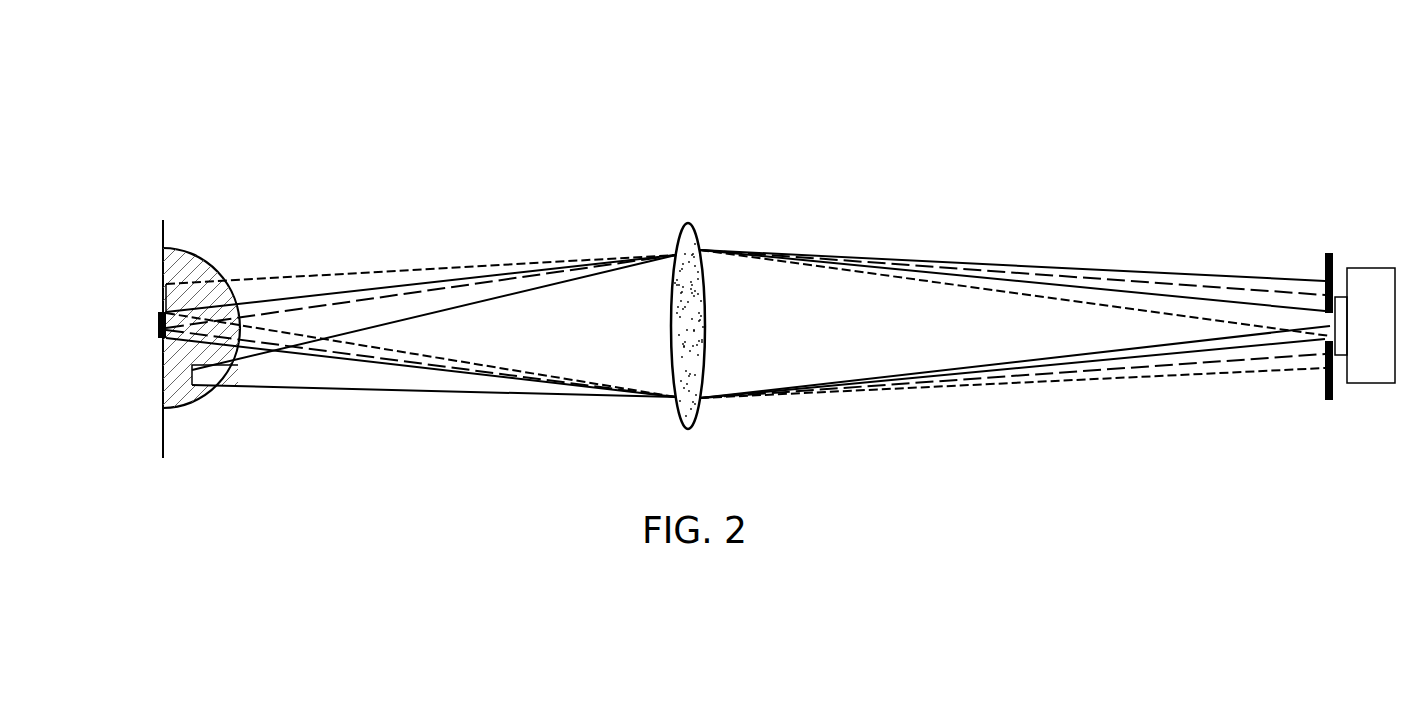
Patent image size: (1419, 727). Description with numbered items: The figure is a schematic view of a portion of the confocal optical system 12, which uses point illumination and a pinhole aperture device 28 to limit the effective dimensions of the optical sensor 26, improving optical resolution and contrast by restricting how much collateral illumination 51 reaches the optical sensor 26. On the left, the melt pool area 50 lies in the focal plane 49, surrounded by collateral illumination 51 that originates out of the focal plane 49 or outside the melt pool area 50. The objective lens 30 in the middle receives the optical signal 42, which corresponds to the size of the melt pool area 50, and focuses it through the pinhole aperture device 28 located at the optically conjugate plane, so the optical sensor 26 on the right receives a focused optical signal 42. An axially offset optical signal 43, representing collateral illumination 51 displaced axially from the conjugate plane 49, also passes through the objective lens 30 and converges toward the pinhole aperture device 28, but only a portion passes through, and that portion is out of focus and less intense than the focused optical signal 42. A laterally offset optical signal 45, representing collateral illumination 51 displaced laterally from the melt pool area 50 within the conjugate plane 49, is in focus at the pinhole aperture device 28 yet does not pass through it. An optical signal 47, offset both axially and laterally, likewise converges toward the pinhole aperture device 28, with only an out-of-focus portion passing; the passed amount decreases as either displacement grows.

The confocal optical system 12 is at (1011, 119).
The optical sensor 26 is at (1370, 268).
The pinhole aperture device 28 is at (1328, 252).
The objective lens 30 is at (683, 224).
The optical signal 42 is at (513, 380).
The axially offset optical signal 43 is at (348, 299).
The laterally offset optical signal 45 is at (437, 267).
The optical signal 47 is at (453, 393).
The focal plane 49 is at (165, 443).
The melt pool area 50 is at (157, 325).
The collateral illumination 51 is at (209, 254).